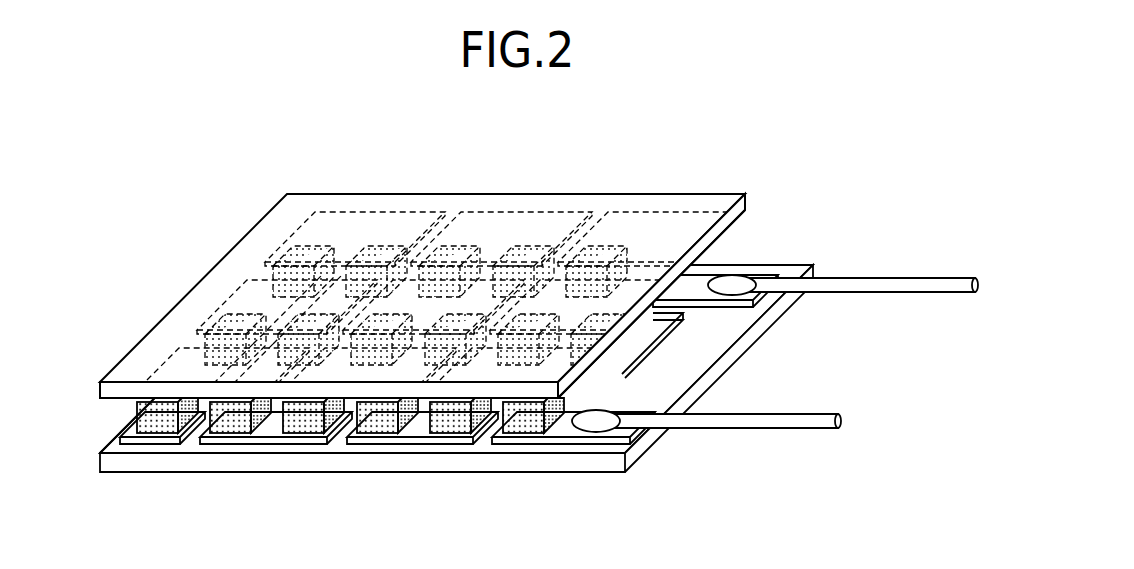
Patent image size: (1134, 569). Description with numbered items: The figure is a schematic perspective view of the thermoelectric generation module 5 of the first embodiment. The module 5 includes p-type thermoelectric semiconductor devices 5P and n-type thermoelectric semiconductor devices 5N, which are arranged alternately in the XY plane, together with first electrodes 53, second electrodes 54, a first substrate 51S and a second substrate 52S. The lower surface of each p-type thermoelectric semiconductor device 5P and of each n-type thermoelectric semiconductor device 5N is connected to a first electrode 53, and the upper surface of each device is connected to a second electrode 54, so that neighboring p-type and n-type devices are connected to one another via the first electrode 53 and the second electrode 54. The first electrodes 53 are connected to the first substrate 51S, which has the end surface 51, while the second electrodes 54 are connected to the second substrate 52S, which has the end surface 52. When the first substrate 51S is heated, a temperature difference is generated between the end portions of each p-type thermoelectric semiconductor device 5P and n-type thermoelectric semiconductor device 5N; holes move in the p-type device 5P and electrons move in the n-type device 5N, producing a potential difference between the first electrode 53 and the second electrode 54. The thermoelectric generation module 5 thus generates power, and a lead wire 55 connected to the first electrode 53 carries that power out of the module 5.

The thermoelectric generation module 5 is at (250, 200).
The end surface 51 is at (448, 472).
The first substrate 51S is at (100, 462).
The end surface 52 is at (577, 197).
The second substrate 52S is at (199, 283).
The first electrode 53 is at (373, 440).
The second electrode 54 is at (270, 318).
The lead wire 55 is at (874, 286).
The p-type thermoelectric semiconductor device 5P is at (228, 422).
The n-type thermoelectric semiconductor device 5N is at (303, 423).